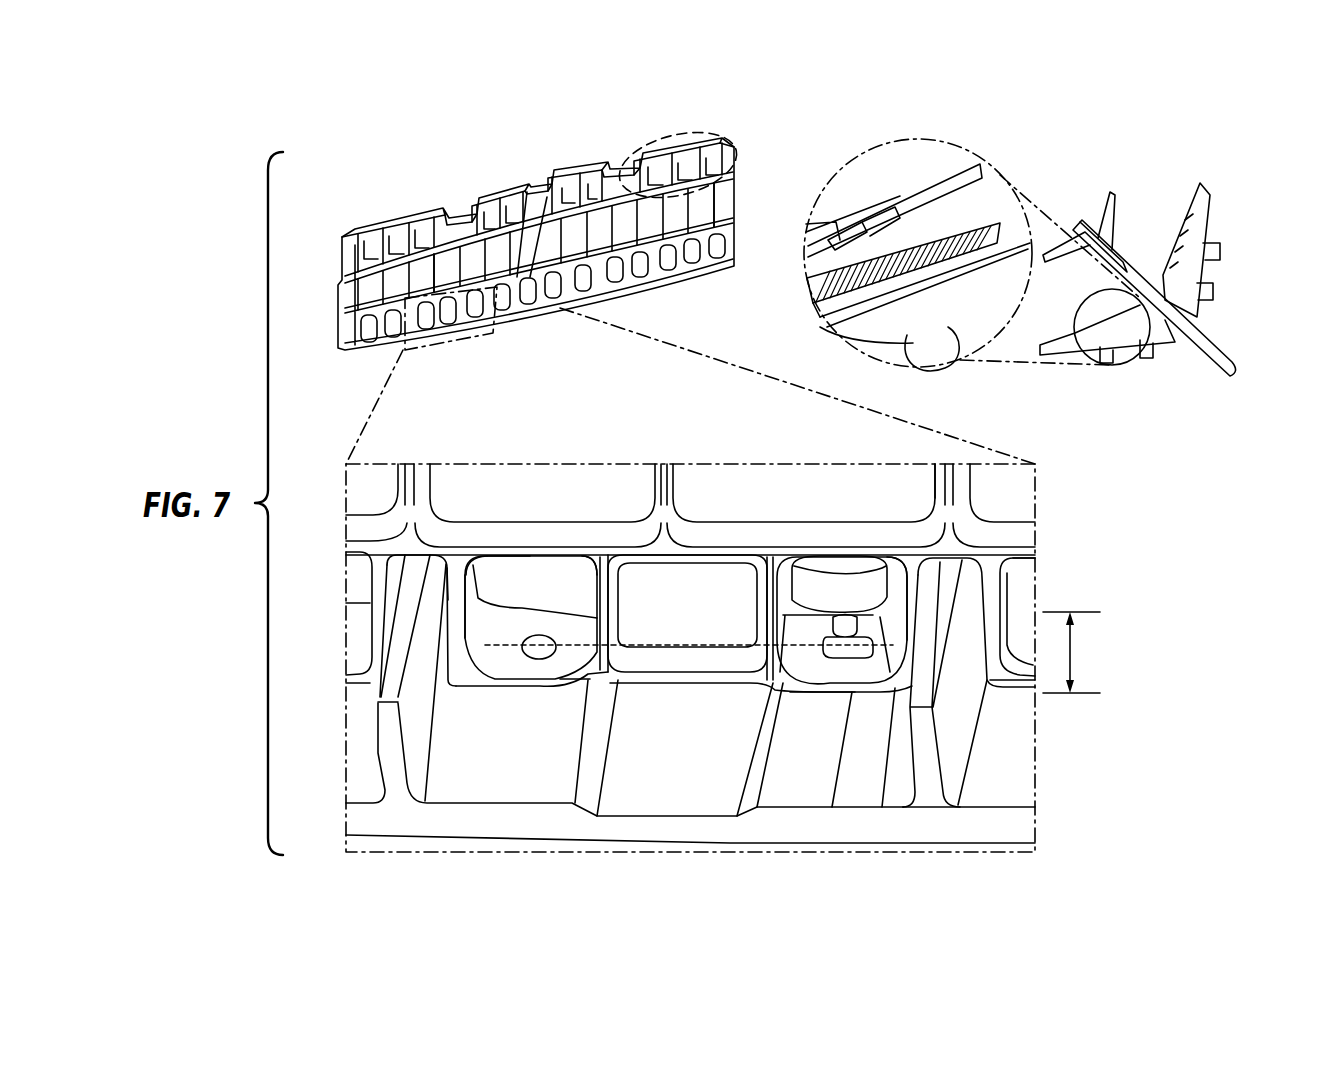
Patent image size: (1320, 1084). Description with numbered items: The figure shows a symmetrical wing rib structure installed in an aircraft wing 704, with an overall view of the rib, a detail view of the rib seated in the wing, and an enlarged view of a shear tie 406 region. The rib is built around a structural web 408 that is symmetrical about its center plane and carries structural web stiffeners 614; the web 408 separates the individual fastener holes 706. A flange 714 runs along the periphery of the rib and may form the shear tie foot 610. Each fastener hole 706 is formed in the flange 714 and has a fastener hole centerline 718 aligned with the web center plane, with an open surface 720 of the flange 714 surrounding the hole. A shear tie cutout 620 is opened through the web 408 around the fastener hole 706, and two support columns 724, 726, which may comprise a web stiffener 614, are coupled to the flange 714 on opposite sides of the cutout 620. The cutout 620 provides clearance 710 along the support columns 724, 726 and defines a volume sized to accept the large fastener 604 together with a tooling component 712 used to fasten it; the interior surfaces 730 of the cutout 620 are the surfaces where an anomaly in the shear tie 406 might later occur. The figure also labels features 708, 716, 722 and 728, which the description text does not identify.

The shear tie 406 is at (640, 148).
The structural web 408 is at (505, 245).
The shear tie foot 610 is at (718, 142).
The rib 728 is at (663, 278).
The wing 704 is at (1200, 237).
The support column 724 is at (450, 580).
The recess 722 is at (533, 612).
The fastener hole 706 is at (538, 634).
The support column 726 is at (593, 583).
The tooling component 712 is at (820, 583).
The clearance 710 is at (895, 597).
The structural web stiffener 614 is at (940, 487).
The interior surfaces 730 is at (1005, 590).
The height 708 is at (1075, 648).
The shear tie cutout 620 is at (520, 583).
The fastener hole centerline 718 is at (540, 653).
The flange 714 is at (552, 690).
The open surface 720 is at (803, 657).
The large fastener 604 is at (847, 657).
The base flange 716 is at (970, 830).